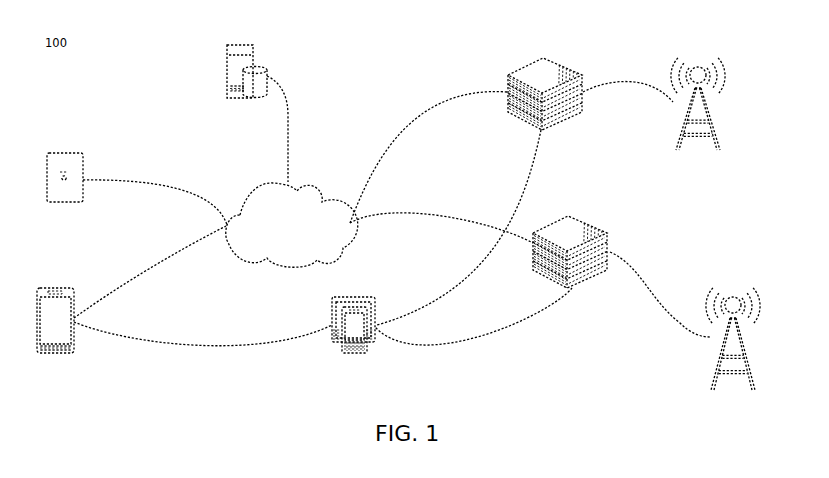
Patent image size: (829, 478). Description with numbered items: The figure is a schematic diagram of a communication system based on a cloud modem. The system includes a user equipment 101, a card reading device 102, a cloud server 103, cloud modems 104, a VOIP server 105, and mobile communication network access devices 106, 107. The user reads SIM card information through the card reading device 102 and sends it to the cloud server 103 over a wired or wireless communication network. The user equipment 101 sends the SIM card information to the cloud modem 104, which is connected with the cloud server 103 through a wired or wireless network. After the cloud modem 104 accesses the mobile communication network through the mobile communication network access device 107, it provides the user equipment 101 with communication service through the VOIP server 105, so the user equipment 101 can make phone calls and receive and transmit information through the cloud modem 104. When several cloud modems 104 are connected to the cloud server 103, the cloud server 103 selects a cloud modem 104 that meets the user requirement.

The user equipment 101 is at (62, 285).
The card reading device 102 is at (62, 155).
The cloud server 103 is at (297, 191).
The cloud modem 104 is at (566, 62).
The VOIP server 105 is at (353, 297).
The mobile communication network access device 106 is at (715, 115).
The mobile communication network access device 107 is at (253, 57).